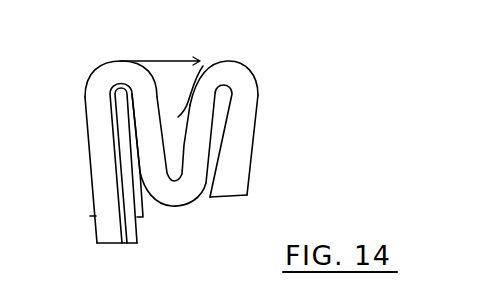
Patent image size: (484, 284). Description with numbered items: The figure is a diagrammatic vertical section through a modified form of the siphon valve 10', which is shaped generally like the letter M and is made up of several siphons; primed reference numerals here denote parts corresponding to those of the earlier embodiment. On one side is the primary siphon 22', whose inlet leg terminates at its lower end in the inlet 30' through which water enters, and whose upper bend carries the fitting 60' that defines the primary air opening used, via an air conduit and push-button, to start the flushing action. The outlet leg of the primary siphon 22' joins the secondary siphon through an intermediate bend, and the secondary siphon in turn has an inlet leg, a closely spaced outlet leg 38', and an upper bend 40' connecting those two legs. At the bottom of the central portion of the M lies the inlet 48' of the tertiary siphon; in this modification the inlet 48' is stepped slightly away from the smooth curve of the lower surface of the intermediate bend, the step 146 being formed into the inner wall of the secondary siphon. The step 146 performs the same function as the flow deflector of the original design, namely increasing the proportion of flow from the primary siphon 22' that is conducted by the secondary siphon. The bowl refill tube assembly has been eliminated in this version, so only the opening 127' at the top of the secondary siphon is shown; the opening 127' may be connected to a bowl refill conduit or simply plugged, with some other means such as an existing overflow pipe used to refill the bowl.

The siphon valve 10' is at (236, 122).
The primary siphon 22' is at (276, 145).
The inlet 30' is at (227, 220).
The outlet leg 38' is at (64, 170).
The upper bend 40' is at (159, 37).
The inlet 48' is at (173, 171).
The fitting 60' is at (212, 63).
The opening 127' is at (111, 53).
The step 146 is at (140, 172).